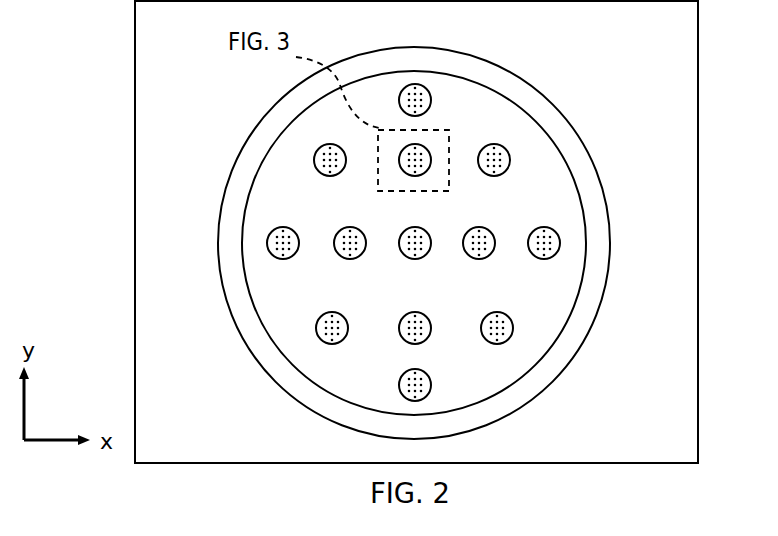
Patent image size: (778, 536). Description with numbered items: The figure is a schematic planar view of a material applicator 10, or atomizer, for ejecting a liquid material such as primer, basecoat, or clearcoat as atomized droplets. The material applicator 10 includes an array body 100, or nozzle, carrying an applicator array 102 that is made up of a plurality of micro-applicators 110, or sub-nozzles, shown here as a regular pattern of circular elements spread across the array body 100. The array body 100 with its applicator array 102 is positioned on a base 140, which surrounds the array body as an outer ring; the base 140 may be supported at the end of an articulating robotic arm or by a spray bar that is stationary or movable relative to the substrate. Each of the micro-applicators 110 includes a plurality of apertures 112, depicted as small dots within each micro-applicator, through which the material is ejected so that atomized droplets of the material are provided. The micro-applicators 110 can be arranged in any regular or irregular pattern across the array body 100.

The material applicator 10 is at (642, 101).
The array body 100 is at (494, 80).
The applicator array 102 is at (267, 180).
The micro-applicators 110 is at (307, 224).
The apertures 112 is at (330, 322).
The base 140 is at (617, 185).